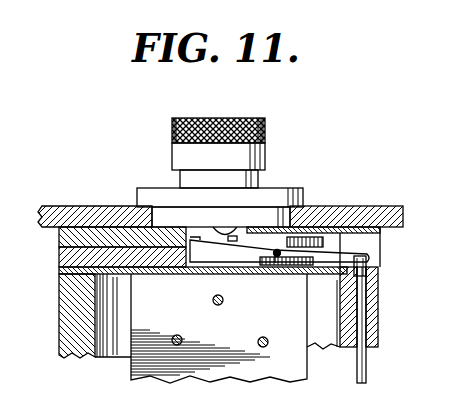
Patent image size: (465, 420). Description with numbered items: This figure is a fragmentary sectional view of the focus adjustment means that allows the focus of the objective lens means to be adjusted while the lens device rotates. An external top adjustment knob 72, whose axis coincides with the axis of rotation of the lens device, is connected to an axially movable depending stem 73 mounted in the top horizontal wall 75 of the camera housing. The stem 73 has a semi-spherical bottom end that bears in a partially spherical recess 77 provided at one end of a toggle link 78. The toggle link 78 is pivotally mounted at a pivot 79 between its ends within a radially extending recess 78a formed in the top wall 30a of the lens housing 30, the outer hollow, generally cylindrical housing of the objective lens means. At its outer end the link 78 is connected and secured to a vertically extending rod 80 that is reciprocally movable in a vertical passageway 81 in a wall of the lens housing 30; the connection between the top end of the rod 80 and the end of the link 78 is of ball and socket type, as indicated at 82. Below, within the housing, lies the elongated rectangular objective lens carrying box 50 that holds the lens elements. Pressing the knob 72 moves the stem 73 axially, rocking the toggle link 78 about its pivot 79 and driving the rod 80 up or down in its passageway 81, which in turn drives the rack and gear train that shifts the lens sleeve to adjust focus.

The lens housing 30 is at (60, 296).
The top wall of lens housing 30a is at (97, 228).
The objective lens carrying box 50 is at (250, 372).
The top adjustment knob 72 is at (267, 127).
The stem 73 is at (230, 227).
The top horizontal wall 75 is at (380, 209).
The partially spherical recess 77 is at (207, 227).
The toggle link 78 is at (257, 252).
The radially extending recess 78a is at (306, 217).
The pivot 79 is at (290, 262).
The vertically extending rod 80 is at (365, 369).
The vertical passageway 81 is at (362, 301).
The ball and socket connection 82 is at (368, 255).